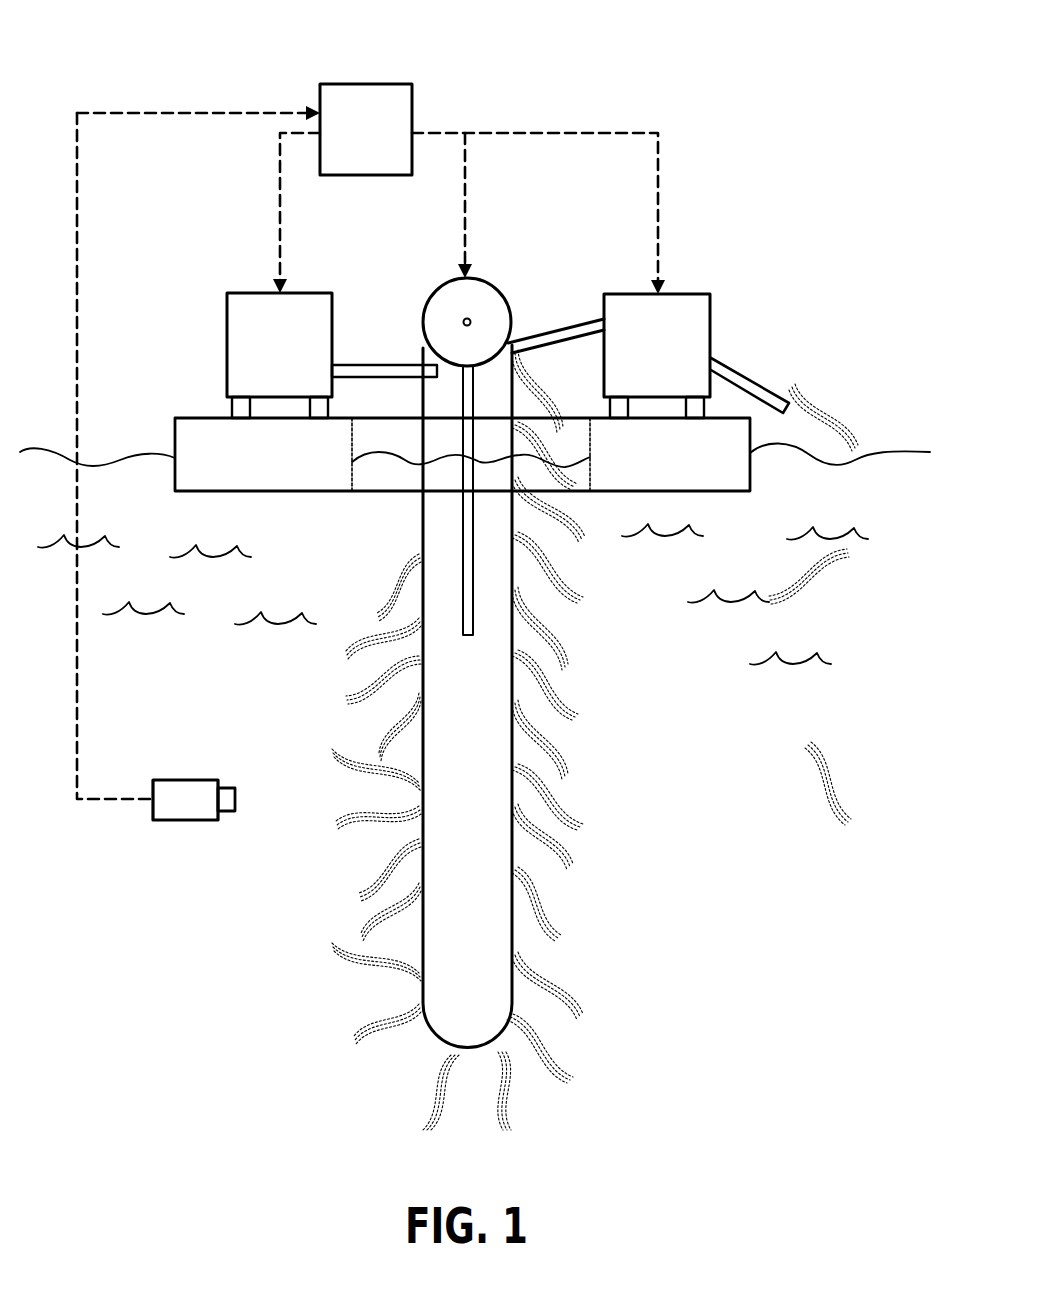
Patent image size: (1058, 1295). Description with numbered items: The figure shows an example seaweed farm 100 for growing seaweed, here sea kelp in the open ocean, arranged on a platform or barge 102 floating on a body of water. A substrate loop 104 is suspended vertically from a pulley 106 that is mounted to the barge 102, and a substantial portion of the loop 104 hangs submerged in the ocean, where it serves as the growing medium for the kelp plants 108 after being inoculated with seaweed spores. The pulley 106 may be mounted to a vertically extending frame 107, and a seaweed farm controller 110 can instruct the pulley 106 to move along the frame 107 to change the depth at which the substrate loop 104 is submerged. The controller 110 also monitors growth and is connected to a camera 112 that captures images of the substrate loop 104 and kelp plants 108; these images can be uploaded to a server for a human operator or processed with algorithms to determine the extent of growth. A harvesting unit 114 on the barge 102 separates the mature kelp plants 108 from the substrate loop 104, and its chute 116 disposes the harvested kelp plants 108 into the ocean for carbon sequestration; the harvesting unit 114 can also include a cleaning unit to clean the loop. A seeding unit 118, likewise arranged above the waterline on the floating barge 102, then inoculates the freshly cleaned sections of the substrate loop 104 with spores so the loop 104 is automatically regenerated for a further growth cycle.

The seaweed farm 100 is at (718, 58).
The barge 102 is at (194, 418).
The substrate loop 104 is at (423, 505).
The pulley 106 is at (490, 289).
The frame 107 is at (462, 508).
The kelp plants 108 is at (590, 733).
The seaweed farm controller 110 is at (366, 129).
The camera 112 is at (186, 780).
The harvesting unit 114 is at (609, 356).
The chute 116 is at (766, 370).
The seeding unit 118 is at (332, 355).